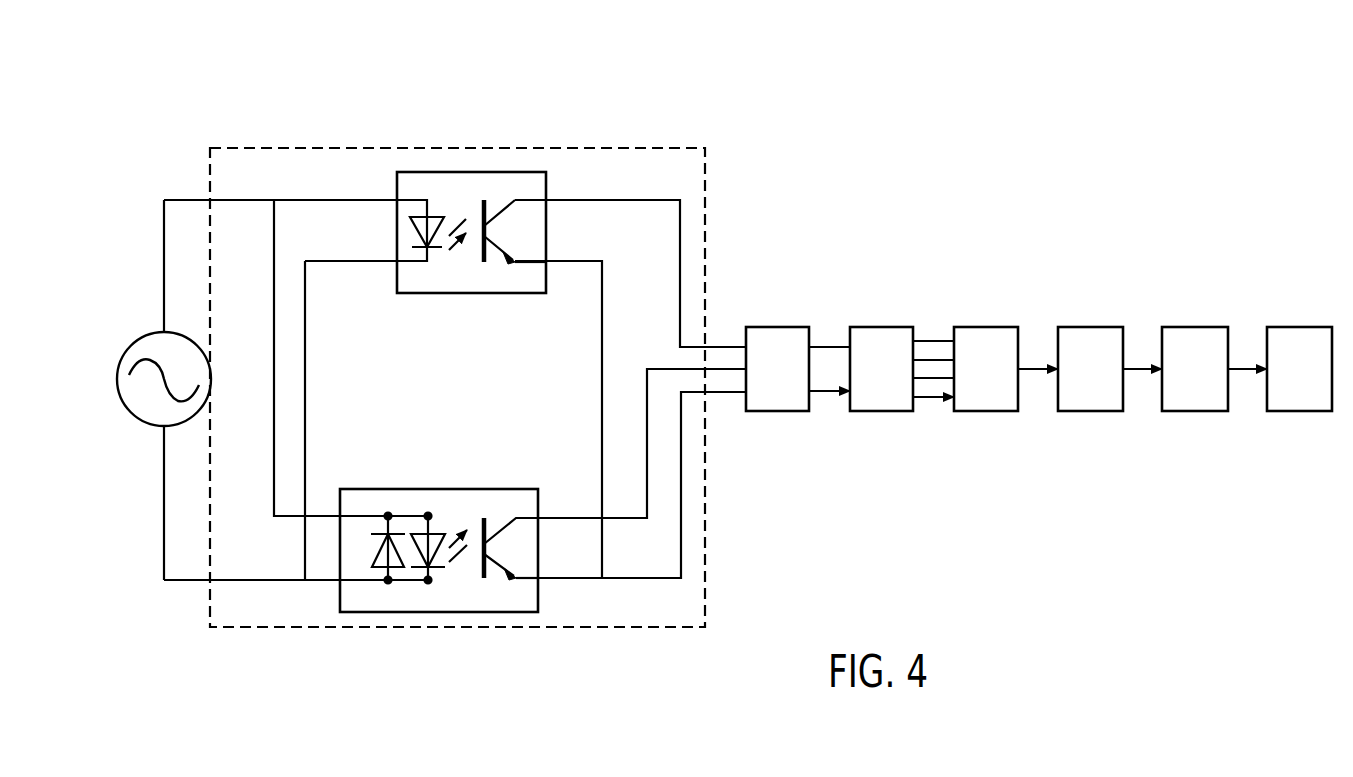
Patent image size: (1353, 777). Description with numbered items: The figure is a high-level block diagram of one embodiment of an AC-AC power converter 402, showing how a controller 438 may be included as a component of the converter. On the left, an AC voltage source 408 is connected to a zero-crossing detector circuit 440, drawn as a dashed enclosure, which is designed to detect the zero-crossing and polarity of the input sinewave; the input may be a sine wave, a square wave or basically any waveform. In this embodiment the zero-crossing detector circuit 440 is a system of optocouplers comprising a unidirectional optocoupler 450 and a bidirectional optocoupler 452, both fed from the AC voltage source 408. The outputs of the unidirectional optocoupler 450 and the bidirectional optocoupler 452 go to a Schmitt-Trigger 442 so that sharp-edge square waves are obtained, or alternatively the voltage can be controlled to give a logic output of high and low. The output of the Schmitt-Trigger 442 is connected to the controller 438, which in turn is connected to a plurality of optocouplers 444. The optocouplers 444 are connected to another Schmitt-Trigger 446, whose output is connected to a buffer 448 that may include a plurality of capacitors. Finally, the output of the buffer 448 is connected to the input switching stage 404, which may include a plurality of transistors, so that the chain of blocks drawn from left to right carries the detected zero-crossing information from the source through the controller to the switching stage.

The power converter 402 is at (343, 97).
The zero-crossing detector circuit 440 is at (596, 148).
The unidirectional optocoupler 450 is at (471, 293).
The bidirectional optocoupler 452 is at (438, 489).
The AC voltage source 408 is at (130, 415).
The Schmitt-Trigger 442 is at (797, 381).
The controller 438 is at (901, 381).
The optocouplers 444 is at (1006, 381).
The Schmitt-Trigger 446 is at (1111, 381).
The buffer 448 is at (1215, 381).
The input switching stage 404 is at (1320, 381).